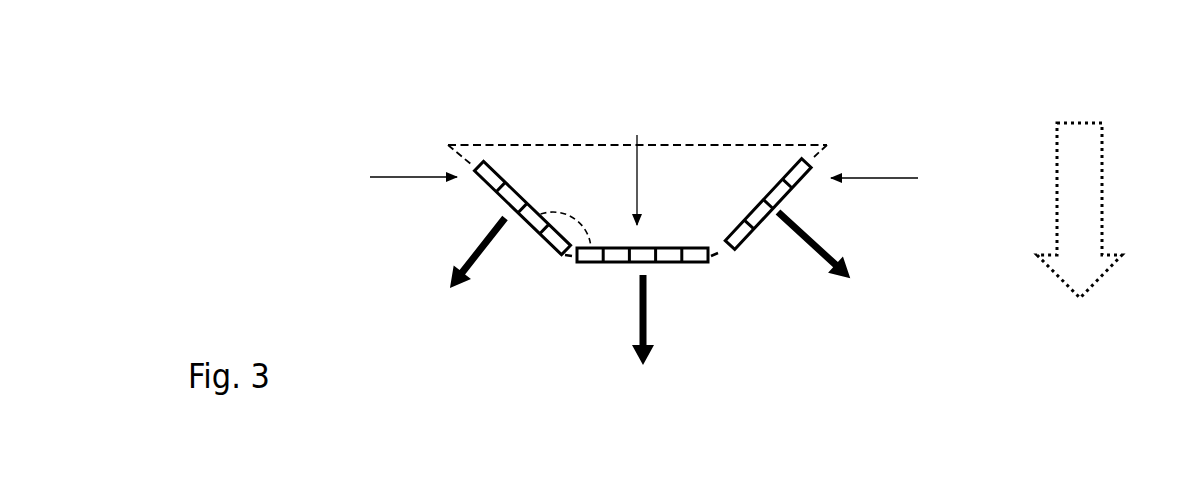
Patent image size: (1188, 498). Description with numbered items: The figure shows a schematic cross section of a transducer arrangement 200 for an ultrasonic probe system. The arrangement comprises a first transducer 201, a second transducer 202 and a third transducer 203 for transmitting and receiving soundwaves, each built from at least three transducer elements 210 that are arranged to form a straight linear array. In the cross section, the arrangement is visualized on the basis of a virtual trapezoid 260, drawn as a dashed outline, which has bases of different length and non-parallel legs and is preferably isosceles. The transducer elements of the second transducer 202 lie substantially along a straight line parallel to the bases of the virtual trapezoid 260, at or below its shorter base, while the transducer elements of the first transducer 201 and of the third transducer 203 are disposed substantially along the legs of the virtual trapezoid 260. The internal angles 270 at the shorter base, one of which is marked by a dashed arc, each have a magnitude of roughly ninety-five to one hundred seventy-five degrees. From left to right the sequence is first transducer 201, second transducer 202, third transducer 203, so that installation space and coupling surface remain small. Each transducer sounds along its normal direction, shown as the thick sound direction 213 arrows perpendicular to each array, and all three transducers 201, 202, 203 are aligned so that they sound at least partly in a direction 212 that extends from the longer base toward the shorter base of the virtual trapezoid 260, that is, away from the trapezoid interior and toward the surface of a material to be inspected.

The transducer arrangement 200 is at (462, 82).
The first transducer 201 is at (384, 173).
The second transducer 202 is at (651, 159).
The third transducer 203 is at (906, 182).
The transducer elements 210 is at (806, 150).
The direction 212 is at (1040, 120).
The sound direction 213 is at (447, 252).
The virtual trapezoid 260 is at (760, 134).
The internal angles 270 is at (576, 200).